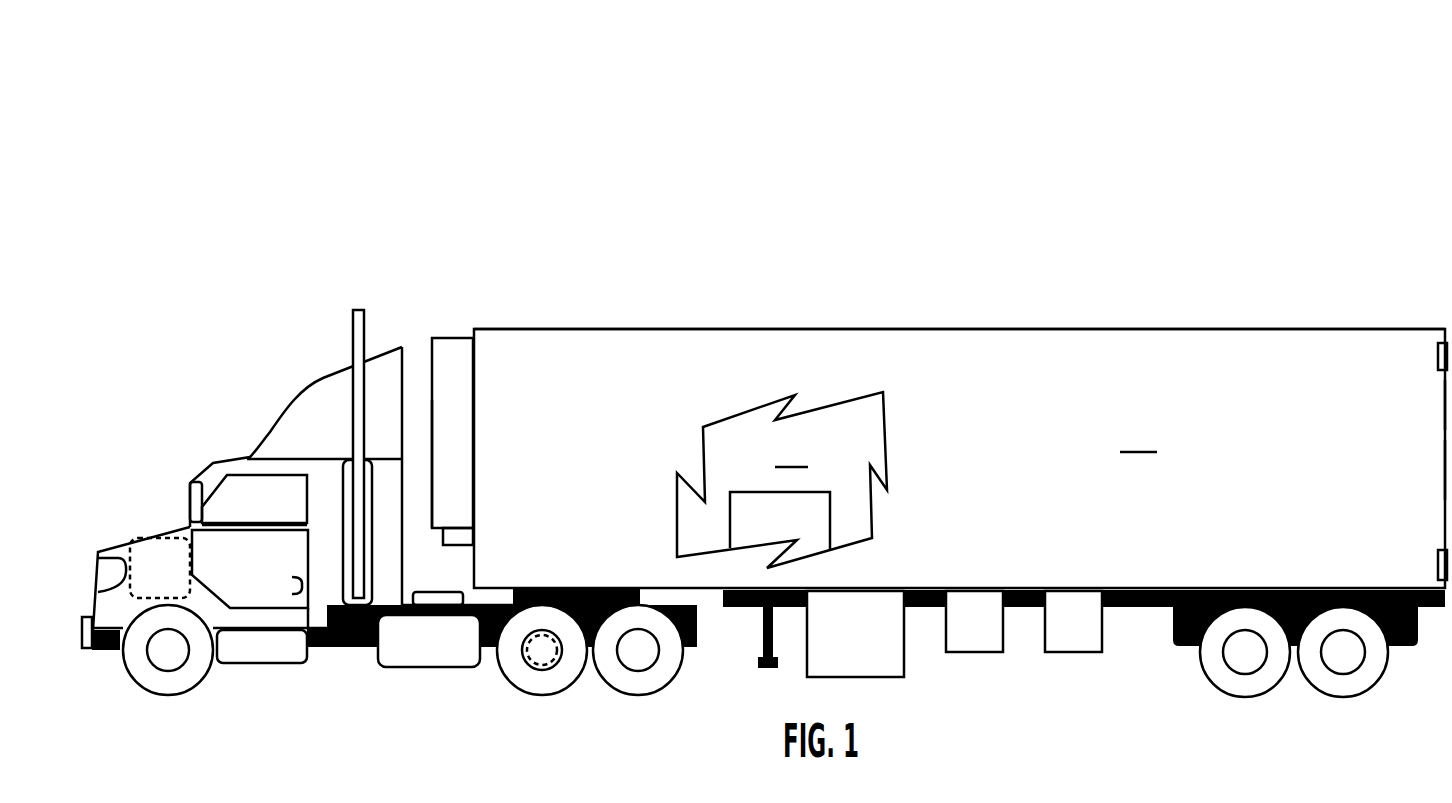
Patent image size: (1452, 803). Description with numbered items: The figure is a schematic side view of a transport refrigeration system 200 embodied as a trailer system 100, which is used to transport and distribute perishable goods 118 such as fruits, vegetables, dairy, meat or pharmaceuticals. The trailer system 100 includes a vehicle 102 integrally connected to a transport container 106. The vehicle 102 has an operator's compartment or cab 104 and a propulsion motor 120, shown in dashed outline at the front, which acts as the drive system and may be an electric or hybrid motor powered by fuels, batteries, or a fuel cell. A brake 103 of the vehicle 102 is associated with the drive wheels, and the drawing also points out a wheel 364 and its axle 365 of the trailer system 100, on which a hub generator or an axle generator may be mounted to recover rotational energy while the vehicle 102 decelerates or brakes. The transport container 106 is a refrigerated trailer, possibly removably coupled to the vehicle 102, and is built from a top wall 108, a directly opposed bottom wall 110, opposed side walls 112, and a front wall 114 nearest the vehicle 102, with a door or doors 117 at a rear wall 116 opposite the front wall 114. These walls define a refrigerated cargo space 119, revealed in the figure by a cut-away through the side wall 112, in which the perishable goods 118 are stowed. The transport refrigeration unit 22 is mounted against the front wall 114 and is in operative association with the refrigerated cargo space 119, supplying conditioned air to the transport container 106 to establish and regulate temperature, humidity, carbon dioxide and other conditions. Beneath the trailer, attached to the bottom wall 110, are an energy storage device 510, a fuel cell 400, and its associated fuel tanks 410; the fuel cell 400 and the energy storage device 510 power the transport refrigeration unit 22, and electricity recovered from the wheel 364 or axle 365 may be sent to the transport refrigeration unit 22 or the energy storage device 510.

The trailer system 100 is at (358, 200).
The vehicle 102 is at (108, 652).
The brake 103 is at (522, 650).
The cab 104 is at (229, 495).
The transport container 106 is at (1218, 342).
The top wall 108 is at (648, 330).
The bottom wall 110 is at (1016, 590).
The side walls 112 is at (966, 446).
The front wall 114 is at (474, 475).
The rear wall 116 is at (1440, 405).
The door 117 is at (1449, 465).
The perishable goods 118 is at (730, 512).
The refrigerated cargo space 119 is at (862, 436).
The propulsion motor 120 is at (145, 537).
The transport refrigeration unit 22 is at (432, 362).
The transport refrigeration system 200 is at (465, 294).
The wheel 364 is at (552, 670).
The axle 365 is at (535, 668).
The fuel cell 400 is at (975, 652).
The fuel tanks 410 is at (1075, 652).
The energy storage device 510 is at (873, 677).